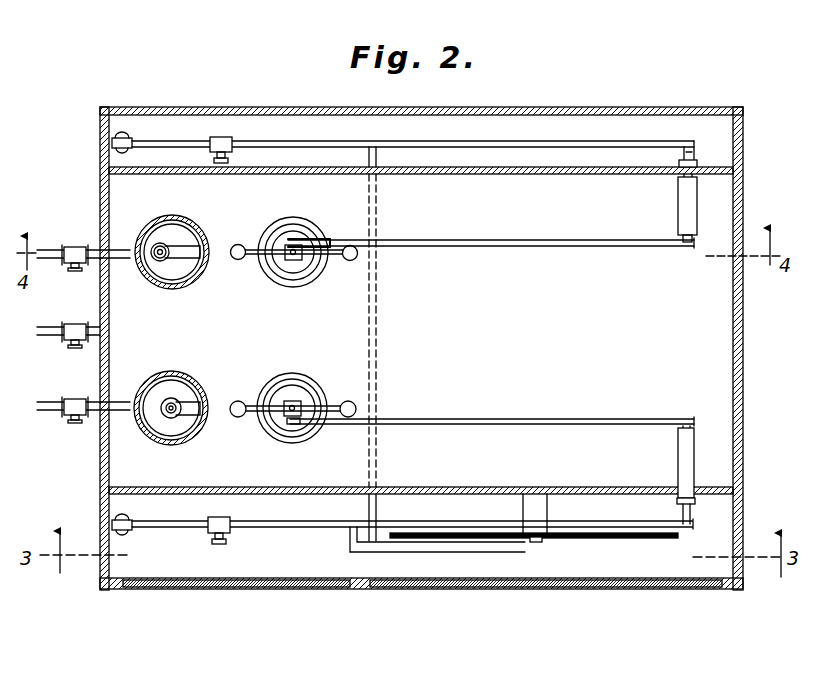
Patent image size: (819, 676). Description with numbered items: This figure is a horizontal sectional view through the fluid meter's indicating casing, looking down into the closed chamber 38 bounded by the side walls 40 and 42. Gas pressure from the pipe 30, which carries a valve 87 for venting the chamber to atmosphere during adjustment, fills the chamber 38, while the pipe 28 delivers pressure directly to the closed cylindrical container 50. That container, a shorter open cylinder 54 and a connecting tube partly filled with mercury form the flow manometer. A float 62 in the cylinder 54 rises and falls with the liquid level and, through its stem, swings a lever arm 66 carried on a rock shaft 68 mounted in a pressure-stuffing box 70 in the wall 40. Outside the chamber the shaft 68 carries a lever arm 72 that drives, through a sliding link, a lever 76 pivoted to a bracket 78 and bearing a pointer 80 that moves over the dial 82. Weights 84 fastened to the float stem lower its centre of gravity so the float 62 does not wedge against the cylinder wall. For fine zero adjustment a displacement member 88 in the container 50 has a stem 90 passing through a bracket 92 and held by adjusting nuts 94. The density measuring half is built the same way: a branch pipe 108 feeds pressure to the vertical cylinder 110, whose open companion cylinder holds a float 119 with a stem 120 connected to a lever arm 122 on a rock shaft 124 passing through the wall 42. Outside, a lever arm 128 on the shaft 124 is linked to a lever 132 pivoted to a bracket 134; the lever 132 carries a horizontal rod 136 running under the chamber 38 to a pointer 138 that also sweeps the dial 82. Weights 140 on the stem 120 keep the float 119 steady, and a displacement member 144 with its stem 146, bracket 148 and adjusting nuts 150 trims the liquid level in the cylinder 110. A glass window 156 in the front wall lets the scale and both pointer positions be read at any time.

The pipe 28 is at (55, 411).
The pipe 30 is at (42, 327).
The closed chamber 38 is at (735, 330).
The side wall 40 is at (432, 487).
The side wall 42 is at (555, 175).
The closed cylindrical container 50 is at (179, 377).
The shorter cylinder 54 is at (312, 436).
The float 62 is at (283, 427).
The lever arm 66 is at (528, 425).
The rock shaft 68 is at (692, 515).
The pressure-stuffing box 70 is at (679, 462).
The lever arm 72 is at (205, 528).
The lever 76 is at (175, 526).
The bracket 78 is at (115, 533).
The pointer 80 is at (470, 553).
The dial 82 is at (613, 539).
The weights 84 is at (238, 400).
The valve 87 is at (74, 342).
The displacement member 88 is at (163, 381).
The stem 90 is at (169, 419).
The bracket 92 is at (192, 424).
The adjusting nuts 94 is at (165, 413).
The branch pipe 108 is at (50, 249).
The vertical cylinder 110 is at (196, 226).
The float 119 is at (296, 273).
The stem 120 is at (320, 235).
The lever arm 122 is at (498, 247).
The rock shaft 124 is at (695, 153).
The lever arm 128 is at (464, 143).
The lever 132 is at (156, 142).
The bracket 134 is at (113, 137).
The horizontal rod 136 is at (377, 330).
The pointer 138 is at (522, 550).
The weights 140 is at (238, 244).
The displacement member 144 is at (153, 262).
The stem 146 is at (162, 272).
The bracket 148 is at (190, 268).
The adjusting nuts 150 is at (161, 248).
The glass window 156 is at (470, 590).